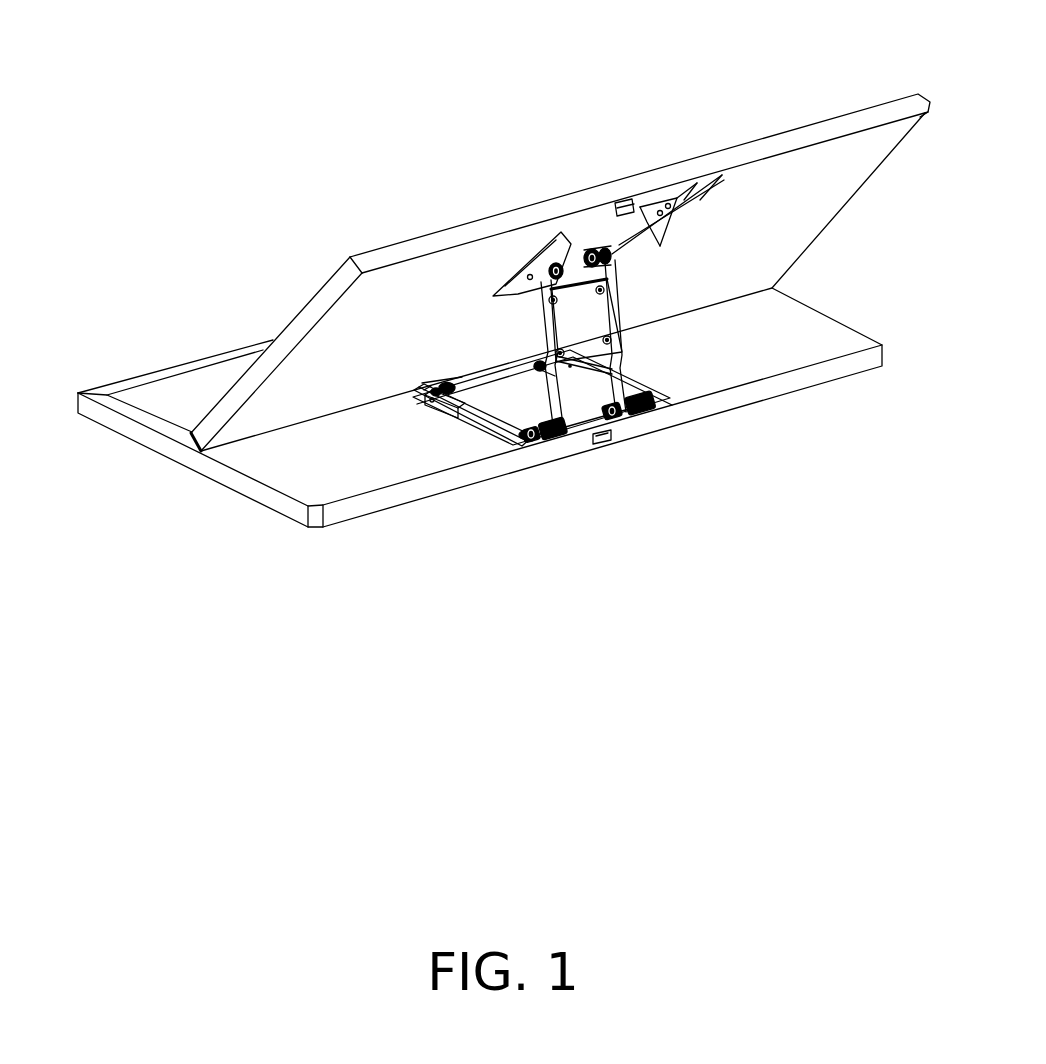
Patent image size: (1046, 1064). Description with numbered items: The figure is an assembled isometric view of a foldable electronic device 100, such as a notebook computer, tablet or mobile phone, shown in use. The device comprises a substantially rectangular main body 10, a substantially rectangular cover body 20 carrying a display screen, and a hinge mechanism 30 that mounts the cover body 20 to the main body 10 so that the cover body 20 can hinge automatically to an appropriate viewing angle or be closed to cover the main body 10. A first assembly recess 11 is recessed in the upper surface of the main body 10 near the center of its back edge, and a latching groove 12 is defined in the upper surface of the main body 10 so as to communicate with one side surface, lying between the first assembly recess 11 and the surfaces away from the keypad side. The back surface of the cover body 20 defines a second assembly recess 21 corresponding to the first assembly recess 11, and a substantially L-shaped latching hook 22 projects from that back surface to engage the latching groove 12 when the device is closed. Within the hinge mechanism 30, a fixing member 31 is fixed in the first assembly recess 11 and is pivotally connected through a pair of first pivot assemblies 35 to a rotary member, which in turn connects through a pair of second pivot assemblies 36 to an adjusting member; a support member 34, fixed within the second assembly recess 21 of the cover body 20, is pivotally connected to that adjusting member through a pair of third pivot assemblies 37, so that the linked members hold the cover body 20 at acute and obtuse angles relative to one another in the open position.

The foldable electronic device 100 is at (345, 72).
The main body 10 is at (167, 425).
The first assembly recess 11 is at (494, 433).
The latching groove 12 is at (607, 445).
The cover body 20 is at (810, 162).
The second assembly recess 21 is at (613, 223).
The latching hook 22 is at (626, 203).
The hinge mechanism 30 is at (612, 324).
The fixing member 31 is at (443, 407).
The support member 34 is at (643, 212).
The first pivot assemblies 35 is at (427, 385).
The second pivot assemblies 36 is at (642, 412).
The third pivot assemblies 37 is at (563, 218).